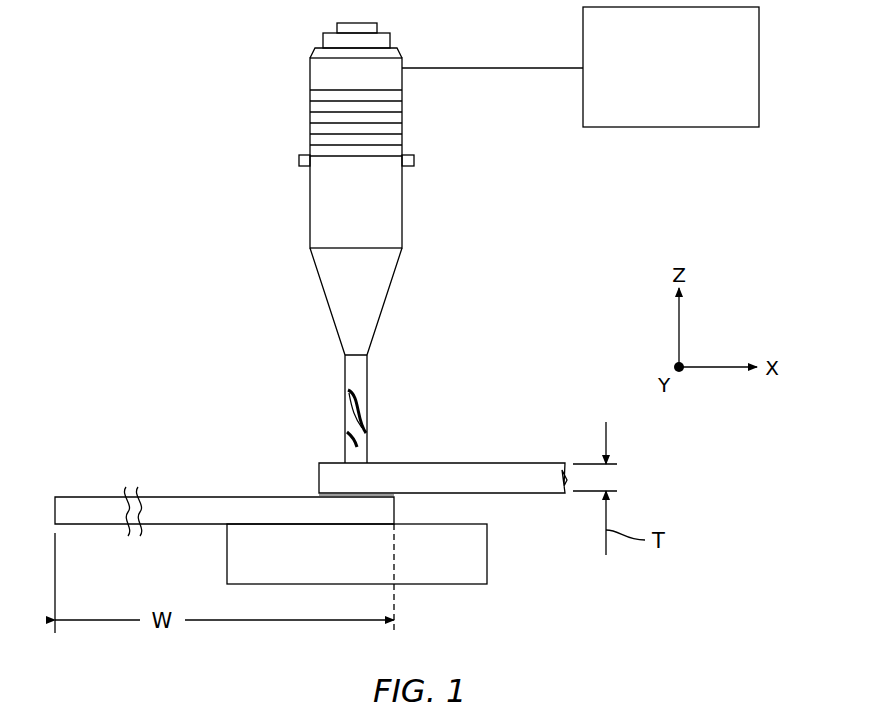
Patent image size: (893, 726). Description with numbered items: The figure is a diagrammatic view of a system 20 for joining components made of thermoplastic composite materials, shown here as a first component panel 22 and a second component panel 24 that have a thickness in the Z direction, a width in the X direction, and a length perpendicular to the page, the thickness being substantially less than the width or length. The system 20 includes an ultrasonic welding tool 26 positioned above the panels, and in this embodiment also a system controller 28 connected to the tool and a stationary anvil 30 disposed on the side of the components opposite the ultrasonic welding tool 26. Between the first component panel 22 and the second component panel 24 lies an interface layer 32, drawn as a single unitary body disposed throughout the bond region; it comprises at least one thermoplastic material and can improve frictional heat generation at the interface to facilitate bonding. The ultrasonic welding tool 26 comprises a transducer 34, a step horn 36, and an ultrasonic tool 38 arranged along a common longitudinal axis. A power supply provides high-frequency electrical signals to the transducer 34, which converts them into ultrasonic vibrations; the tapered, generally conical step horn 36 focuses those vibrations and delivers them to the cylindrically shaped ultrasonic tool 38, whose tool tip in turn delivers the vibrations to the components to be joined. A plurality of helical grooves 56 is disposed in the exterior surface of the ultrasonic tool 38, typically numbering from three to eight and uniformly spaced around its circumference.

The system 20 is at (116, 79).
The first component panel 22 is at (494, 455).
The second component panel 24 is at (195, 487).
The ultrasonic welding tool 26 is at (158, 150).
The system controller 28 is at (658, 113).
The stationary anvil 30 is at (324, 568).
The interface layer 32 is at (394, 496).
The transducer 34 is at (404, 122).
The step horn 36 is at (388, 304).
The ultrasonic tool 38 is at (367, 387).
The helical grooves 56 is at (352, 413).